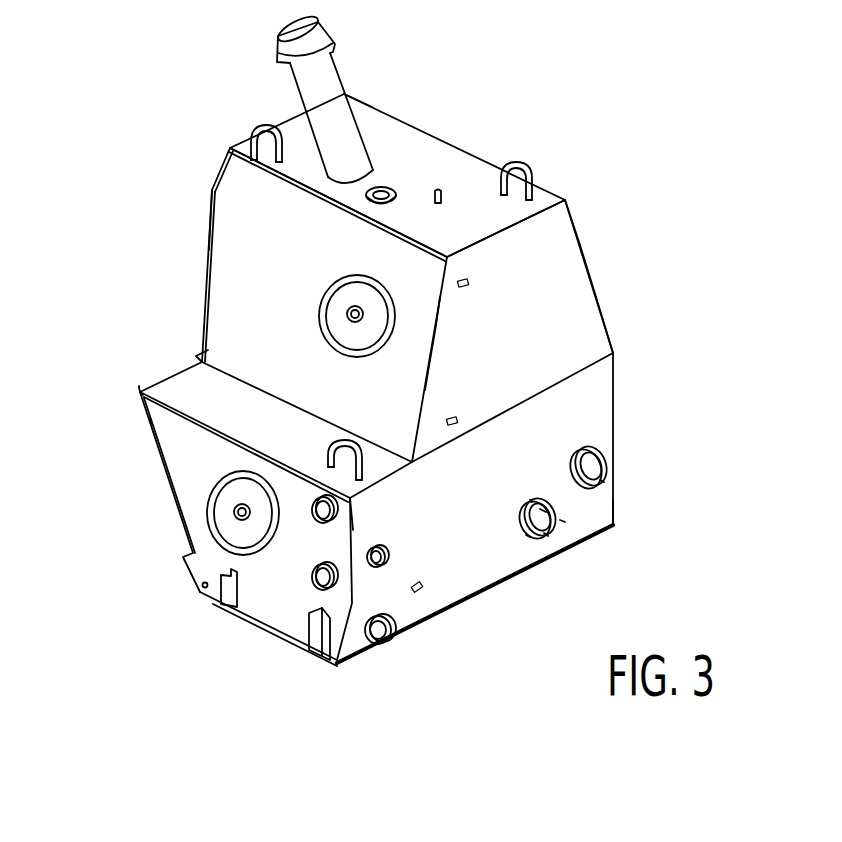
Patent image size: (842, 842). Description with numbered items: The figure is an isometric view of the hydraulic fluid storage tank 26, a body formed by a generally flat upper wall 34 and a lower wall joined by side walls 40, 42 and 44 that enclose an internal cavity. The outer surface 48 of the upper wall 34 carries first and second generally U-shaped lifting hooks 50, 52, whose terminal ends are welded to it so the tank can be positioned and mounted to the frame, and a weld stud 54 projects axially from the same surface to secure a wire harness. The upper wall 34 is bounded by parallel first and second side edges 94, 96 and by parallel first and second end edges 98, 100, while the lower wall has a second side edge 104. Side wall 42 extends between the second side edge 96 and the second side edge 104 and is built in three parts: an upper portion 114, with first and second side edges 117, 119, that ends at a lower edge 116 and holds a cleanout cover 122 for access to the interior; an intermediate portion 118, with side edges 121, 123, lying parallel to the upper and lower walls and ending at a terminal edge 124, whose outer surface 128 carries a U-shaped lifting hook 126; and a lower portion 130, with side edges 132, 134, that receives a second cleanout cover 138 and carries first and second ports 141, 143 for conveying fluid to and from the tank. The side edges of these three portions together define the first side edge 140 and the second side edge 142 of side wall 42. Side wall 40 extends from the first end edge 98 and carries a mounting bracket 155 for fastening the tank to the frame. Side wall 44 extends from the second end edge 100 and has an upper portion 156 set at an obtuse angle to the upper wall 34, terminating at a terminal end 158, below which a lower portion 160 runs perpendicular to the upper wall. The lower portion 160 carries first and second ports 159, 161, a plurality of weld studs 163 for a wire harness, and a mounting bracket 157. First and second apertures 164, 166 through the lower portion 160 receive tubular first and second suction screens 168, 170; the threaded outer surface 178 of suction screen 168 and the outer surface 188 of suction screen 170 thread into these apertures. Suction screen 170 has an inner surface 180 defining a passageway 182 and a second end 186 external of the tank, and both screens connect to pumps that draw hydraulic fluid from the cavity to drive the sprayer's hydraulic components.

The storage tank 26 is at (690, 380).
The upper wall 34 is at (414, 128).
The side wall 40 is at (227, 153).
The side wall 42 is at (279, 328).
The side wall 44 is at (594, 237).
The outer surface 48 is at (440, 181).
The first lifting hook 50 is at (257, 128).
The second lifting hook 52 is at (522, 161).
The weld stud 54 is at (443, 200).
The first side edge 94 is at (402, 146).
The second side edge 96 is at (323, 200).
The first end edge 98 is at (287, 117).
The second end edge 100 is at (563, 232).
The second side edge 104 is at (257, 623).
The upper portion 114 is at (403, 360).
The lower edge 116 is at (215, 347).
The first side edge 117 is at (205, 243).
The intermediate portion 118 is at (202, 392).
The second side edge 119 is at (438, 299).
The first side edge 121 is at (167, 381).
The cleanout cover 122 is at (316, 288).
The second side edge 123 is at (374, 484).
The terminal edge 124 is at (208, 424).
The U-shaped lifting hook 126 is at (357, 453).
The outer surface 128 is at (410, 635).
The lower portion 130 is at (200, 513).
The first side edge 132 is at (167, 473).
The second side edge 134 is at (380, 530).
The cleanout cover 138 is at (214, 467).
The first side edge 140 is at (194, 297).
The first port 141 is at (310, 493).
The second side edge 142 is at (428, 372).
The second port 143 is at (304, 578).
The mounting bracket 155 is at (187, 566).
The upper portion 156 is at (573, 303).
The mounting bracket 157 is at (327, 658).
The terminal end 158 is at (580, 367).
The first port 159 is at (390, 562).
The lower portion 160 is at (603, 512).
The second port 161 is at (393, 643).
The weld studs 163 is at (468, 282).
The first aperture 164 is at (594, 436).
The second aperture 166 is at (548, 517).
The first suction screen 168 is at (611, 484).
The second suction screen 170 is at (551, 492).
The outer surface 178 is at (606, 443).
The inner surface 180 is at (567, 523).
The passageway 182 is at (547, 537).
The second end 186 is at (528, 538).
The outer surface 188 is at (523, 510).